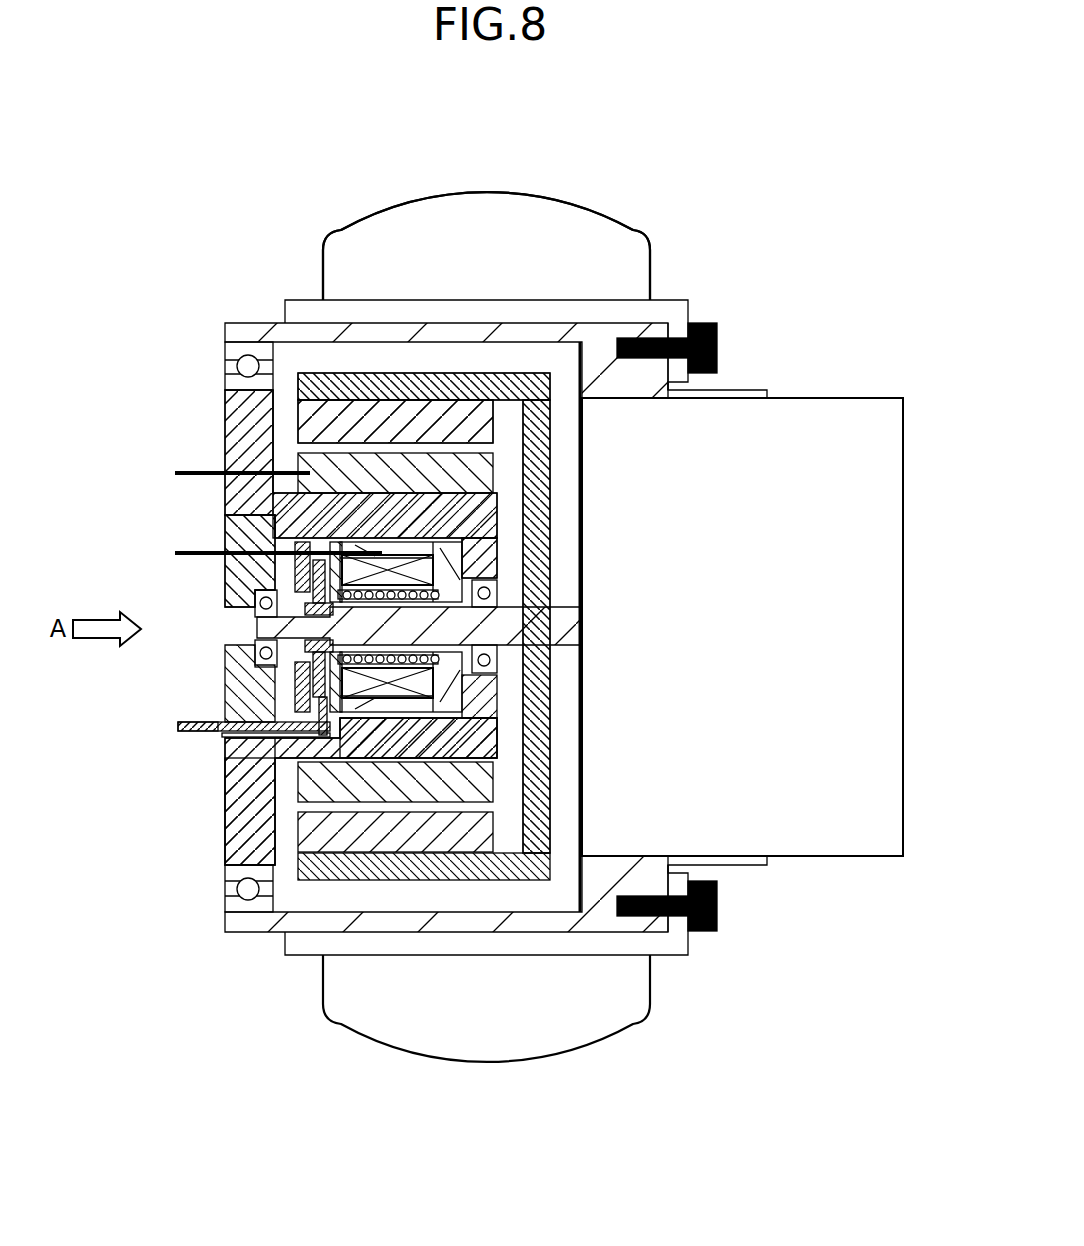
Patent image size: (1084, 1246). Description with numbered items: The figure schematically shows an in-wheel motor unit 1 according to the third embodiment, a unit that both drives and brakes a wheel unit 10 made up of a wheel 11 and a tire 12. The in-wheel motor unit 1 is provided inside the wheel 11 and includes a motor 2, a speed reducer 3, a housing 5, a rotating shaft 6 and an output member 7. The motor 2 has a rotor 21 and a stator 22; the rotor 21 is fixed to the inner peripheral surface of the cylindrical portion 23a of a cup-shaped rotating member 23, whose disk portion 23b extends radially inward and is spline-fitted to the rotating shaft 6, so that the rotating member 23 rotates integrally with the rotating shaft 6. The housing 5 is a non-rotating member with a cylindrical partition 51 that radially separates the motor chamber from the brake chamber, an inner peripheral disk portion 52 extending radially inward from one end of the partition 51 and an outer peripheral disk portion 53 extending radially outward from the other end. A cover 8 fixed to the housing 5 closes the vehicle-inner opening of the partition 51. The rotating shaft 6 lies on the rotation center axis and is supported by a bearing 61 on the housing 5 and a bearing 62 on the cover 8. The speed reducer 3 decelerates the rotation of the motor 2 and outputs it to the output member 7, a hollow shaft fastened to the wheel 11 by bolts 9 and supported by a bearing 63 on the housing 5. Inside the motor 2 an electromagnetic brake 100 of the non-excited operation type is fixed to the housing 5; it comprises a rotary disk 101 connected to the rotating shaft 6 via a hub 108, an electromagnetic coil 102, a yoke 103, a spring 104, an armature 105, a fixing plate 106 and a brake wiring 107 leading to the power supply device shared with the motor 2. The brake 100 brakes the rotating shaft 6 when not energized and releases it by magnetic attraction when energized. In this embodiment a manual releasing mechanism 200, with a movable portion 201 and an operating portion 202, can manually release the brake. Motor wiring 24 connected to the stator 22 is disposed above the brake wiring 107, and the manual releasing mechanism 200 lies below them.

The in-wheel motor unit 1 is at (806, 264).
The motor 2 is at (289, 394).
The speed reducer 3 is at (905, 628).
The housing 5 is at (221, 497).
The rotating shaft 6 is at (242, 632).
The output member 7 is at (443, 333).
The cover 8 is at (237, 707).
The bolts 9 is at (718, 348).
The wheel unit 10 is at (609, 195).
The wheel 11 is at (672, 300).
The tire 12 is at (482, 193).
The rotor 21 is at (303, 420).
The stator 22 is at (303, 463).
The rotating member 23 is at (316, 366).
The cylindrical portion 23a is at (356, 385).
The disk portion 23b is at (558, 483).
The motor wiring 24 is at (175, 472).
The partition 51 is at (405, 516).
The inner peripheral disk portion 52 is at (503, 556).
The outer peripheral disk portion 53 is at (240, 426).
The bearing 61 is at (414, 657).
The bearing 62 is at (307, 650).
The bearing 63 is at (225, 348).
The electromagnetic brake 100 is at (286, 580).
The rotary disk 101 is at (253, 847).
The electromagnetic coil 102 is at (413, 688).
The yoke 103 is at (446, 690).
The spring 104 is at (450, 630).
The armature 105 is at (305, 708).
The fixing plate 106 is at (278, 770).
The brake wiring 107 is at (175, 553).
The hub 108 is at (225, 742).
The manual releasing mechanism 200 is at (186, 736).
The movable portion 201 is at (312, 706).
The operating portion 202 is at (178, 727).